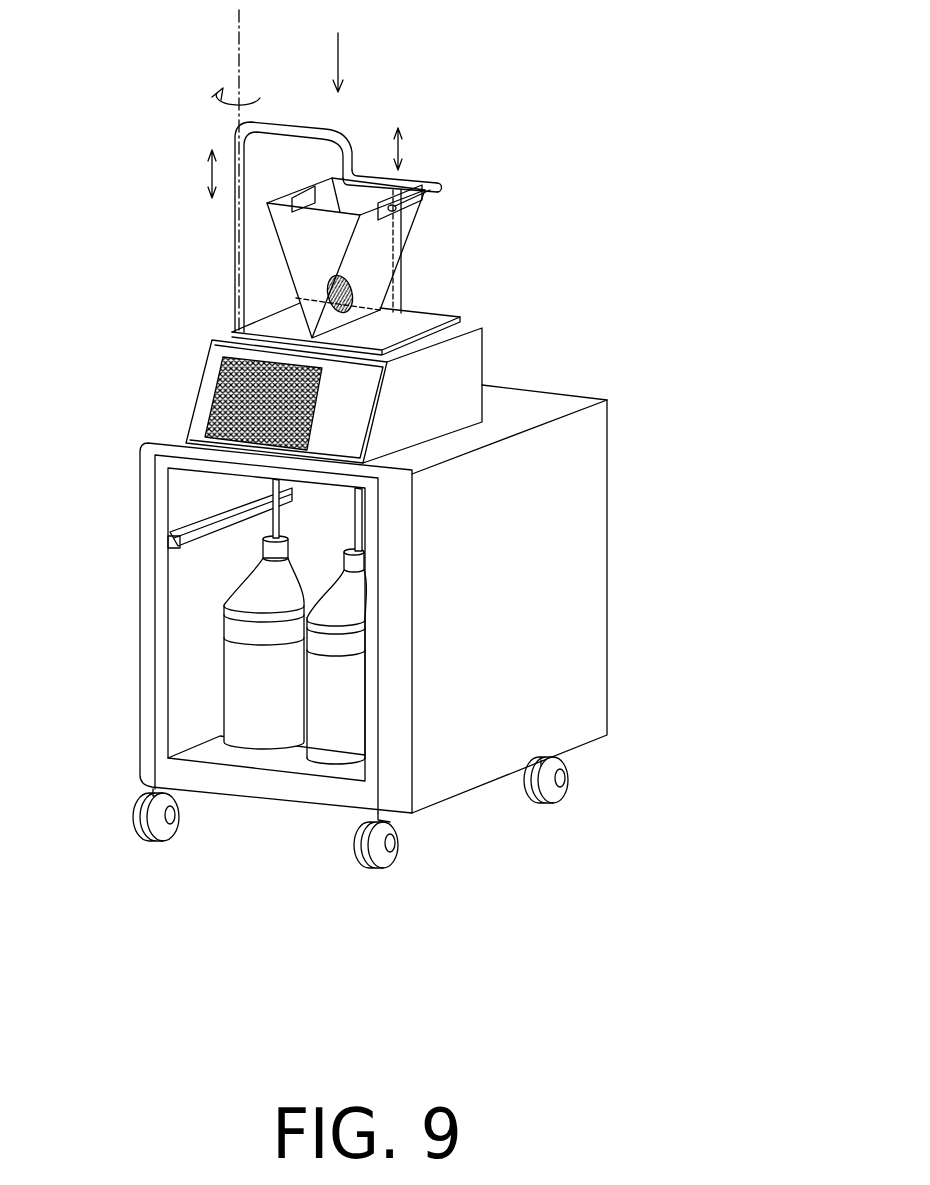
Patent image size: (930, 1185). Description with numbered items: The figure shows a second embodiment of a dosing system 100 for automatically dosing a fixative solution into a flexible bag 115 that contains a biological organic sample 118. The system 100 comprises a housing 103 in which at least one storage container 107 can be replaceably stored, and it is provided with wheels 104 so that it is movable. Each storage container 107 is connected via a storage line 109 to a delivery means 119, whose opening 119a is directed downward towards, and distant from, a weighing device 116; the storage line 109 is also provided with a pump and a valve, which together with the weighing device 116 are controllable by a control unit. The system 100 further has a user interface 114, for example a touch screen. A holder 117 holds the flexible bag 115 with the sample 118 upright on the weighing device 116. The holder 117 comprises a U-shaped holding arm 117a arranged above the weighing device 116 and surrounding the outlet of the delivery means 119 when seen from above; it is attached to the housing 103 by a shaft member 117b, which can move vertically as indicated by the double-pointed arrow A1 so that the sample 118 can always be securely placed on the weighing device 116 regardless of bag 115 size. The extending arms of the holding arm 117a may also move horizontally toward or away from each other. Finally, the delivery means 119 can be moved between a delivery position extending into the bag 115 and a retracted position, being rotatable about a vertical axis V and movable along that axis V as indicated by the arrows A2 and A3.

The dosing system 100 is at (653, 137).
The housing 103 is at (563, 597).
The wheels 104 is at (170, 835).
The storage container 107 is at (257, 675).
The storage line 109 is at (277, 485).
The user interface 114 is at (220, 392).
The flexible bag 115 is at (388, 247).
The weighing device 116 is at (413, 327).
The holder 117 is at (432, 177).
The U-shaped holding arm 117a is at (440, 187).
The shaft member 117b is at (396, 280).
The sample 118 is at (325, 285).
The delivery means 119 is at (272, 128).
The opening 119a is at (363, 178).
The double-pointed arrow A1 is at (400, 152).
The arrow A2 is at (205, 175).
The arrow A3 is at (218, 100).
The vertical axis V is at (237, 23).